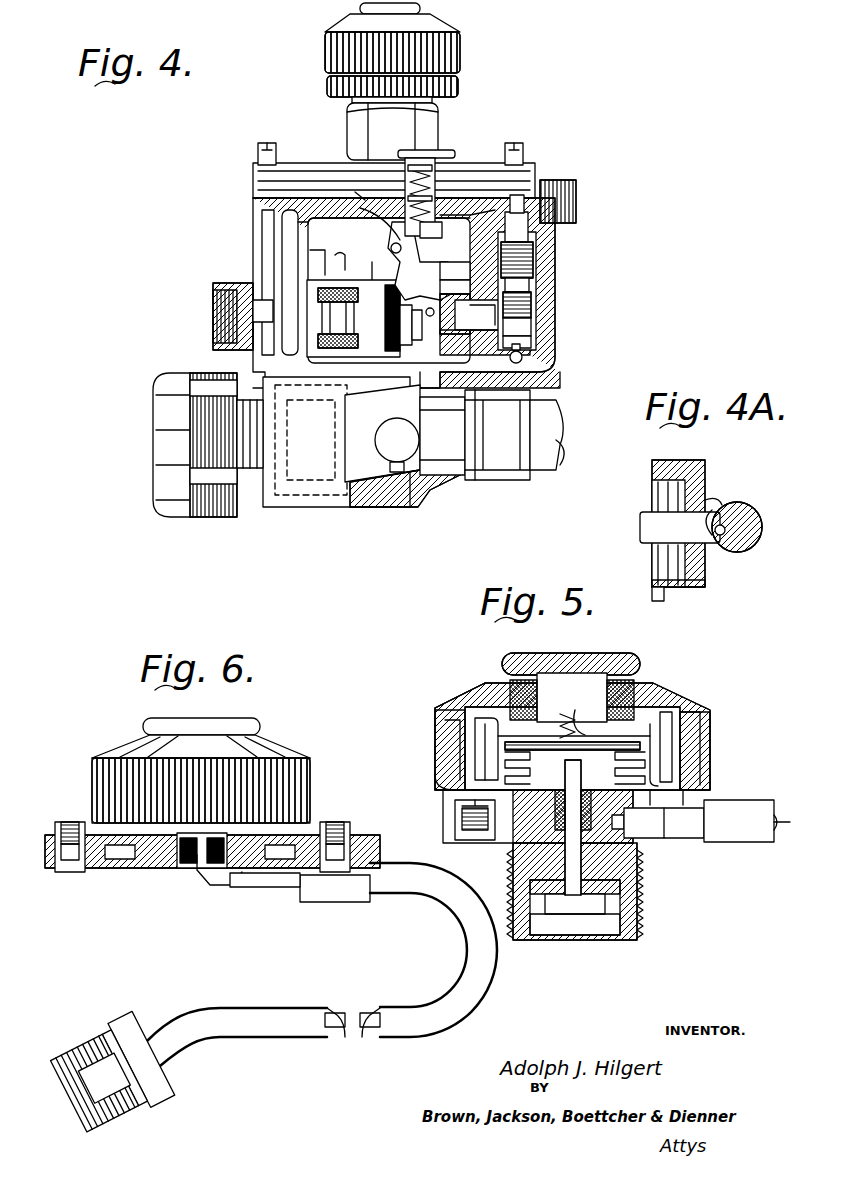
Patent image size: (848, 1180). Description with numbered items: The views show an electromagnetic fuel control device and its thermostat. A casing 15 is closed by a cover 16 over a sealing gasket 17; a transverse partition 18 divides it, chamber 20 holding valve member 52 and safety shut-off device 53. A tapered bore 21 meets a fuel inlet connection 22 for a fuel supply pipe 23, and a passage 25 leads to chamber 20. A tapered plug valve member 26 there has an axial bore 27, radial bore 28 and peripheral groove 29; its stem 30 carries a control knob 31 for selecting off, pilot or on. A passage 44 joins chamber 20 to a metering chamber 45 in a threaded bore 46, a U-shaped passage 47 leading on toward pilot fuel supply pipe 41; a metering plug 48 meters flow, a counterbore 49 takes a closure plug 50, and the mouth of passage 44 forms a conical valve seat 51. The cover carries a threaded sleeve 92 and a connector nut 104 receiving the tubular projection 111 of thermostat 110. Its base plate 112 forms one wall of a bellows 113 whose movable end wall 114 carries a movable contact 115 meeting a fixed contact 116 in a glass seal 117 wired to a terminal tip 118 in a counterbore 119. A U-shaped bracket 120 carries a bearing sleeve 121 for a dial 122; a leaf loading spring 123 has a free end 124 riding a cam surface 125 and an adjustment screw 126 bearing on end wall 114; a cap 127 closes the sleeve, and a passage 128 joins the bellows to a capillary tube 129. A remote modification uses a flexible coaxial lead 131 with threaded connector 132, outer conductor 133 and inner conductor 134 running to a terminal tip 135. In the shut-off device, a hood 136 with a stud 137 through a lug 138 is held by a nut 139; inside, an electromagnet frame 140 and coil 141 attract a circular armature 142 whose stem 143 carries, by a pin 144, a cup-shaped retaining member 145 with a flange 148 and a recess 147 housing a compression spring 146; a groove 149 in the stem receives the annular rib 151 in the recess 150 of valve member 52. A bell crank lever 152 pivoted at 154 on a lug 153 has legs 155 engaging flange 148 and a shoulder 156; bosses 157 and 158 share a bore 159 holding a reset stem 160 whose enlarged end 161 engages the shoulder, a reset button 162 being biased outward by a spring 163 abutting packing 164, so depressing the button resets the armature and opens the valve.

In FIG. 4, the casing 15 is at (380, 496).
In FIG. 4, the cover 16 is at (284, 172).
In FIG. 4, the sealing gasket 17 is at (268, 241).
In FIG. 4, the transverse partition 18 is at (290, 258).
In FIG. 4, the chamber 20 is at (350, 280).
In FIG. 4, the tapered bore 21 is at (350, 495).
In FIG. 4, the fuel inlet connection 22 is at (500, 471).
In FIG. 4, the fuel supply pipe 23 is at (545, 421).
In FIG. 4, the passage 25 is at (404, 378).
In FIG. 4, the tapered plug valve member 26 is at (355, 406).
In FIG. 4, the axial bore 27 is at (430, 411).
In FIG. 4, the radial bore 28 is at (415, 476).
In FIG. 4, the peripheral groove 29 is at (397, 476).
In FIG. 4, the stem 30 is at (250, 471).
In FIG. 4, the control knob 31 is at (208, 511).
In FIG. 4, the pilot fuel supply pipe 41 is at (520, 200).
In FIG. 4, the passage 44 is at (485, 349).
In FIG. 4, the metering chamber 45 is at (531, 326).
In FIG. 4, the internally threaded bore 46 is at (531, 292).
In FIG. 4, the U-shaped passage 47 is at (522, 351).
In FIG. 4, the metering plug 48 is at (540, 282).
In FIG. 4, the internally threaded counterbore 49 is at (533, 256).
In FIG. 4, the closure plug 50 is at (528, 226).
In FIG. 4, the valve seat 51 is at (465, 302).
In FIG. 4, the valve member 52 is at (517, 326).
In FIG. 4A, the valve member 52 is at (750, 515).
In FIG. 4, the safety shut-off device 53 is at (345, 275).
In FIG. 4, the externally threaded sleeve 92 is at (576, 206).
In FIG. 4, the connector nut 104 is at (413, 129).
In FIG. 4, the thermostat 110 is at (440, 45).
In FIG. 5, the thermostat 110 is at (672, 705).
In FIG. 6, the thermostat 110 is at (295, 770).
In FIG. 4, the tubular projection 111 is at (360, 101).
In FIG. 5, the tubular projection 111 is at (640, 896).
In FIG. 4, the base plate 112 is at (459, 83).
In FIG. 5, the base plate 112 is at (510, 850).
In FIG. 6, the base plate 112 is at (160, 860).
In FIG. 5, the bellows 113 is at (492, 752).
In FIG. 5, the movable end wall 114 is at (584, 713).
In FIG. 5, the movable contact 115 is at (640, 744).
In FIG. 5, the fixed contact 116 is at (640, 760).
In FIG. 6, the fixed contact 116 is at (205, 872).
In FIG. 5, the glass seal 117 is at (640, 774).
In FIG. 5, the terminal tip 118 is at (575, 905).
In FIG. 6, the terminal tip 118 is at (190, 870).
In FIG. 5, the counterbore 119 is at (605, 935).
In FIG. 5, the U-shaped bracket 120 is at (445, 790).
In FIG. 5, the bearing sleeve 121 is at (470, 690).
In FIG. 4, the knob 122 is at (345, 47).
In FIG. 5, the knob 122 is at (445, 728).
In FIG. 5, the leaf type loading spring 123 is at (445, 712).
In FIG. 5, the free end portion 124 is at (712, 730).
In FIG. 5, the cam surface 125 is at (708, 716).
In FIG. 5, the adjustment screw 126 is at (557, 714).
In FIG. 5, the cap 127 is at (580, 660).
In FIG. 6, the cap 127 is at (208, 720).
In FIG. 5, the passage 128 is at (635, 832).
In FIG. 5, the capillary tube 129 is at (685, 838).
In FIG. 6, the flexible coaxial cable 131 is at (280, 1028).
In FIG. 6, the externally threaded connector 132 is at (150, 1080).
In FIG. 6, the tubular outer conductor 133 is at (353, 1037).
In FIG. 6, the insulated inner conductor 134 is at (292, 900).
In FIG. 6, the terminal tip 135 is at (85, 1072).
In FIG. 4, the cylindrical hood 136 is at (372, 280).
In FIG. 4, the stud 137 is at (238, 316).
In FIG. 4, the lug 138 is at (300, 276).
In FIG. 4, the nut 139 is at (262, 318).
In FIG. 4, the U-shaped electromagnet frame 140 is at (345, 357).
In FIG. 4, the coil 141 is at (339, 325).
In FIG. 4, the circular armature 142 is at (345, 300).
In FIG. 4, the stem 143 is at (408, 345).
In FIG. 4A, the stem 143 is at (660, 528).
In FIG. 4, the pin 144 is at (446, 301).
In FIG. 4A, the pin 144 is at (712, 498).
In FIG. 4, the cup-shaped retaining member 145 is at (420, 338).
In FIG. 4A, the cup-shaped retaining member 145 is at (690, 590).
In FIG. 4, the coiled compression spring 146 is at (395, 318).
In FIG. 4A, the coiled compression spring 146 is at (655, 505).
In FIG. 4A, the axial cylindrical recess 147 is at (705, 560).
In FIG. 4A, the annular flange 148 is at (660, 601).
In FIG. 4A, the circumferential groove 149 is at (715, 505).
In FIG. 4A, the axial cylindrical recess 150 is at (725, 545).
In FIG. 4A, the annular rib 151 is at (750, 535).
In FIG. 4, the bell crank lever 152 is at (467, 276).
In FIG. 4, the lug 153 is at (390, 226).
In FIG. 4, the pivot 154 is at (392, 240).
In FIG. 4, the legs 155 is at (480, 326).
In FIG. 4, the shoulder 156 is at (467, 262).
In FIG. 4, the internal boss 157 is at (395, 215).
In FIG. 4, the external boss 158 is at (410, 186).
In FIG. 4, the bore 159 is at (455, 212).
In FIG. 4, the reset stem 160 is at (436, 178).
In FIG. 4, the enlarged end portion 161 is at (449, 221).
In FIG. 4, the reset button 162 is at (440, 152).
In FIG. 4, the coiled compression spring 163 is at (434, 198).
In FIG. 4, the packing 164 is at (376, 215).